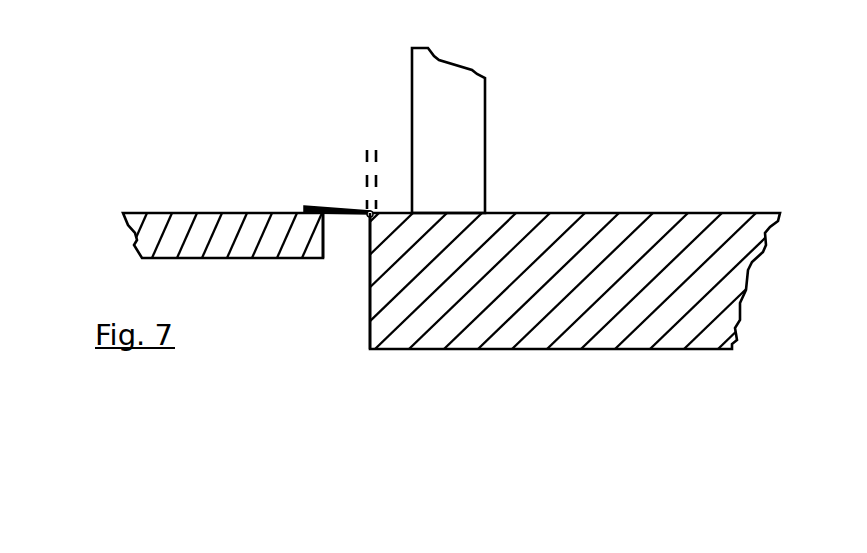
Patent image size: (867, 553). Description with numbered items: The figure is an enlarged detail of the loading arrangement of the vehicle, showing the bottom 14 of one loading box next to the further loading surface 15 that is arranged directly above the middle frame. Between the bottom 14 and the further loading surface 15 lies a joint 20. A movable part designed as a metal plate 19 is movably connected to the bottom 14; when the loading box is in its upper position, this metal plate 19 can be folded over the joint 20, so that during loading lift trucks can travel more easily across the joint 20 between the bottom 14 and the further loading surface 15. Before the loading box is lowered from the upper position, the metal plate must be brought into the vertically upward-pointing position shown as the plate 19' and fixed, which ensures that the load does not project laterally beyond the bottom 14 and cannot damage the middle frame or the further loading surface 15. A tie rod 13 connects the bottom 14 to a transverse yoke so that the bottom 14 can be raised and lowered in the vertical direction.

The tie rod 13 is at (447, 122).
The bottom of the loading box 14 is at (612, 273).
The further loading surface 15 is at (204, 246).
The metal plate 19 is at (305, 157).
The metal plate in vertically upward-pointing position 19' is at (329, 130).
The joint 20 is at (342, 240).